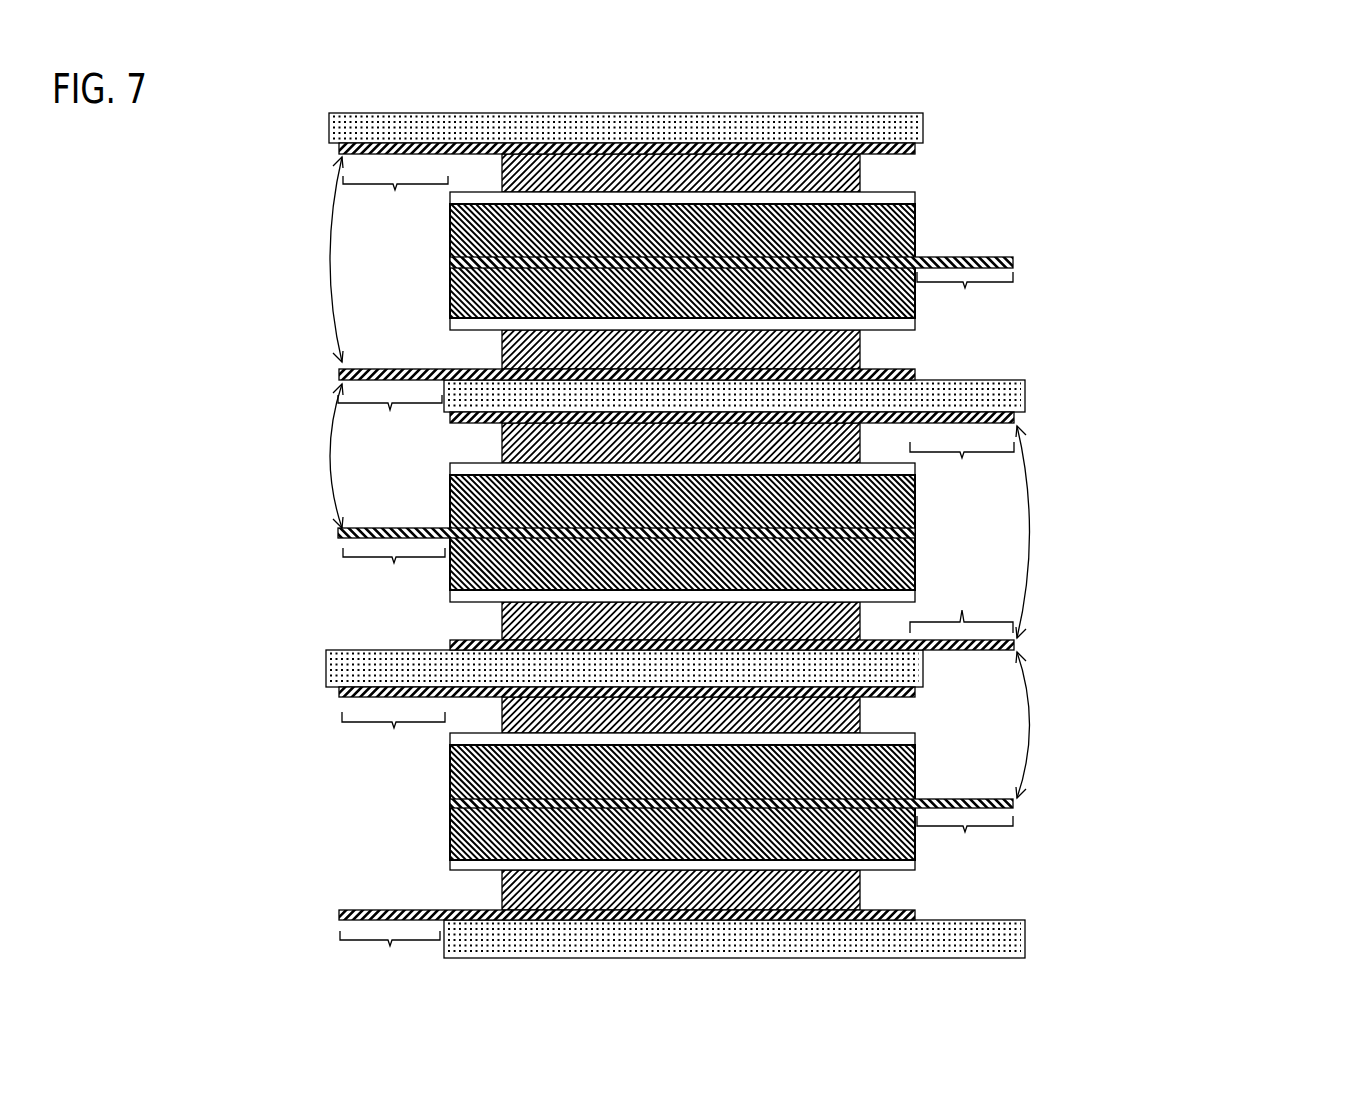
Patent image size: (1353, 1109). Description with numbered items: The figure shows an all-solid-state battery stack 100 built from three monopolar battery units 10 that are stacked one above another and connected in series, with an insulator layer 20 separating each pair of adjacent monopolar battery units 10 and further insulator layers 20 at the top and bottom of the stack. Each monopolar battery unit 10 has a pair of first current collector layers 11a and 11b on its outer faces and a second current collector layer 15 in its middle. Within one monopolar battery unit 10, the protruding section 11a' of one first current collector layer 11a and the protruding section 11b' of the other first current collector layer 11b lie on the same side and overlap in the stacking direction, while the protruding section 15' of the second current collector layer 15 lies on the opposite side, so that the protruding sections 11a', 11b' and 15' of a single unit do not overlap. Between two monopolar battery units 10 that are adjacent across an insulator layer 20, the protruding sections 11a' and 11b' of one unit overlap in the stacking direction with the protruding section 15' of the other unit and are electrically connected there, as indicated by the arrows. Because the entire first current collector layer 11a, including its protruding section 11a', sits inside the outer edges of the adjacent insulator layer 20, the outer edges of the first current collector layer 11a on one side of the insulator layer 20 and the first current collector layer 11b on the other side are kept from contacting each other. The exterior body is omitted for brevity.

The all-solid-state battery stack 100 is at (1183, 540).
The monopolar battery unit 10 is at (315, 145).
The insulator layer 20 is at (345, 128).
The first current collector layer 11a is at (694, 435).
The first current collector layer 11b is at (705, 644).
The second current collector layer 15 is at (694, 532).
The protruding section 11a' is at (678, 472).
The protruding section 11b' is at (675, 689).
The protruding section 15' is at (678, 570).